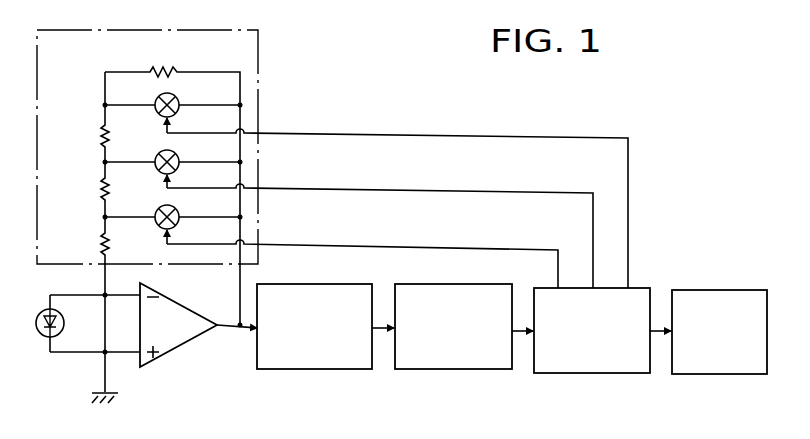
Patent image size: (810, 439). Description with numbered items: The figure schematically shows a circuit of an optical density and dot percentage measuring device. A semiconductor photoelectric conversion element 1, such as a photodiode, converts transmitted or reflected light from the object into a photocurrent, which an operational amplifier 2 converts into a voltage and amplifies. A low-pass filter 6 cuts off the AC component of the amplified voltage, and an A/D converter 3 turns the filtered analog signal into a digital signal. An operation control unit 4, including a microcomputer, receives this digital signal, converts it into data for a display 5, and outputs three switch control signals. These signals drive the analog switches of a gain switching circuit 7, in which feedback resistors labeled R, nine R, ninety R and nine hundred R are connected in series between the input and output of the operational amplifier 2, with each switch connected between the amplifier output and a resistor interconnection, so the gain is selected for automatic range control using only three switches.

The semiconductor photoelectric conversion element 1 is at (40, 336).
The operational amplifier 2 is at (185, 343).
The A/D converter 3 is at (455, 372).
The operation control unit 4 is at (593, 374).
The display 5 is at (720, 376).
The low-pass filter 6 is at (315, 370).
The gain switching circuit 7 is at (258, 57).